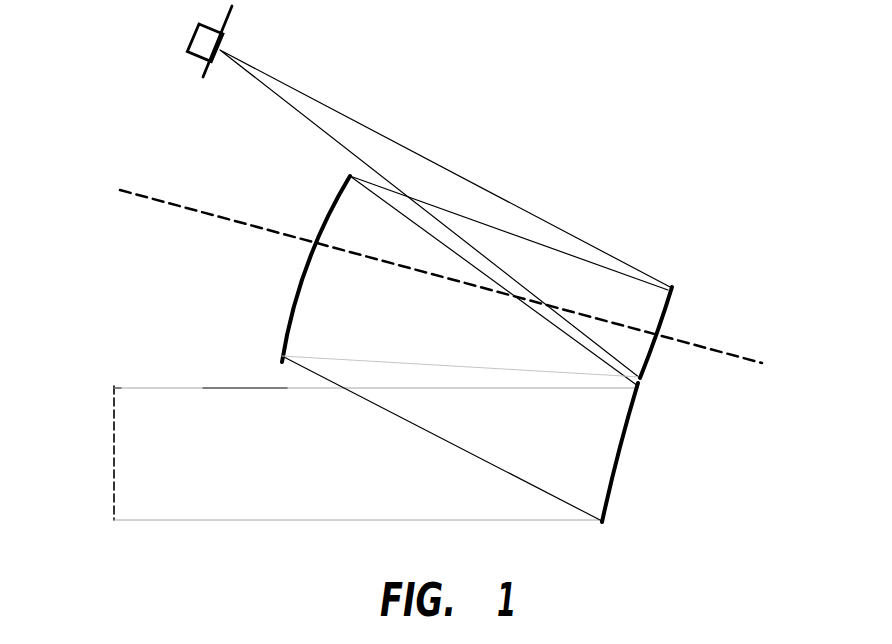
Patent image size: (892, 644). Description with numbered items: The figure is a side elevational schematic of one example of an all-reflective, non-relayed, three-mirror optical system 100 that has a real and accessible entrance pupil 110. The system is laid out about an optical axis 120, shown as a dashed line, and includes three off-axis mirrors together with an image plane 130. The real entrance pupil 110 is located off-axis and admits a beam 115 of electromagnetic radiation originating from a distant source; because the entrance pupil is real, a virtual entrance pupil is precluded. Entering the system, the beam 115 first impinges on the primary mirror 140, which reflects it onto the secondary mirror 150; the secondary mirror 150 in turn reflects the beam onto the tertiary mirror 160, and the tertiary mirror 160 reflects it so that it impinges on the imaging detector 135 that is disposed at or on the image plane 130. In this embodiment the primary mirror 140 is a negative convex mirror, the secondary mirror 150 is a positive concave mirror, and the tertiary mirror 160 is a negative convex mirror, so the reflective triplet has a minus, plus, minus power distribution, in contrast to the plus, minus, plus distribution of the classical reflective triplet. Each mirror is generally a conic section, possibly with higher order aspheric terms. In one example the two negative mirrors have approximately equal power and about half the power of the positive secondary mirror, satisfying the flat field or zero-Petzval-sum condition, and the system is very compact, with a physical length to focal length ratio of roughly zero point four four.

The optical system 100 is at (567, 150).
The entrance pupil 110 is at (114, 458).
The beam 115 is at (268, 387).
The optical axis 120 is at (240, 222).
The image plane 130 is at (200, 76).
The imaging detector 135 is at (190, 50).
The primary mirror 140 is at (620, 452).
The secondary mirror 150 is at (287, 315).
The tertiary mirror 160 is at (662, 315).